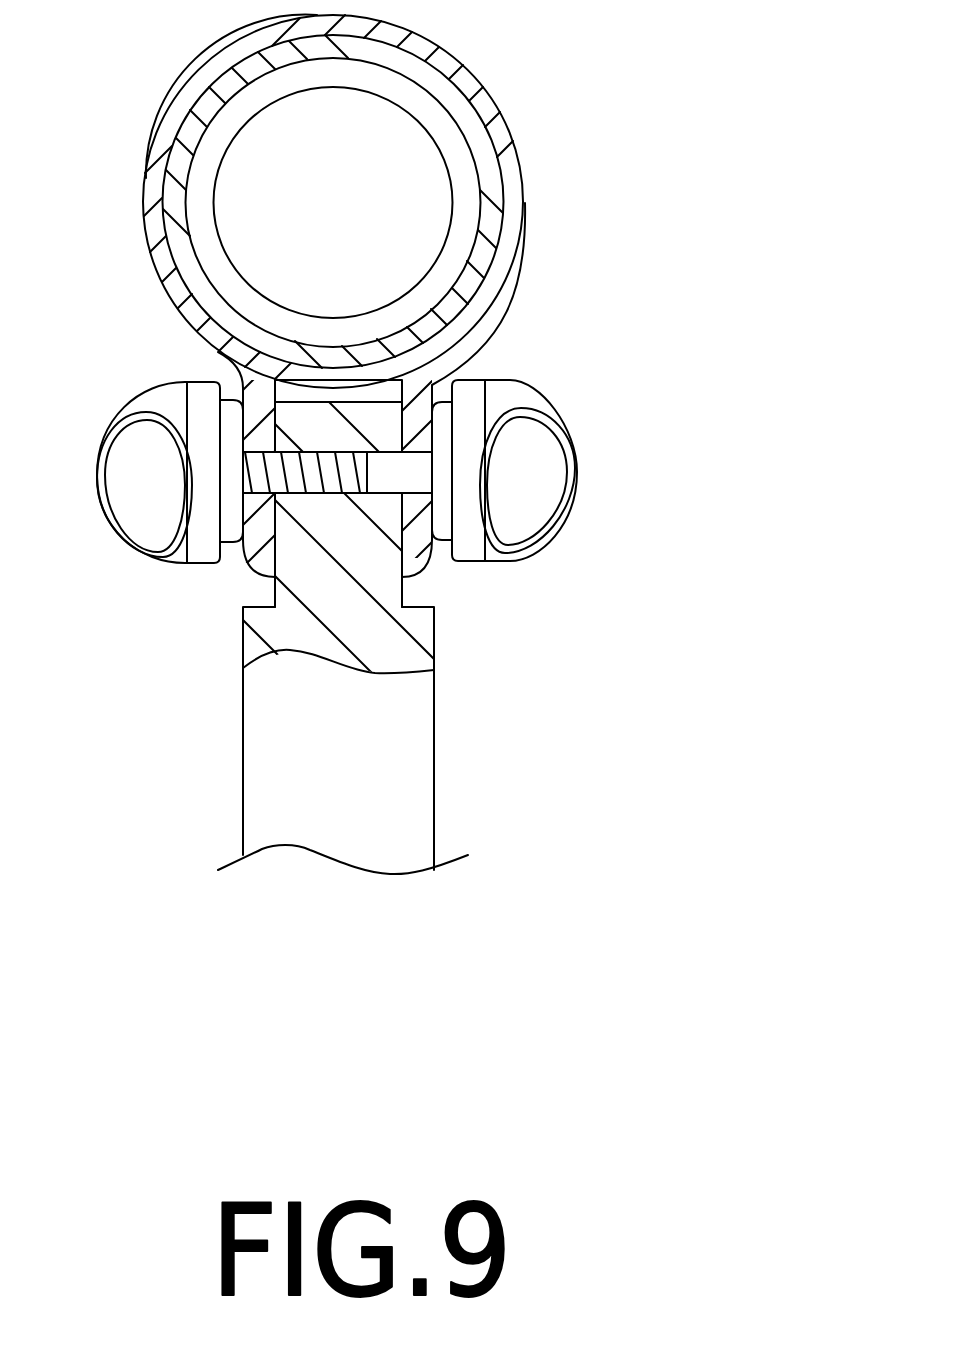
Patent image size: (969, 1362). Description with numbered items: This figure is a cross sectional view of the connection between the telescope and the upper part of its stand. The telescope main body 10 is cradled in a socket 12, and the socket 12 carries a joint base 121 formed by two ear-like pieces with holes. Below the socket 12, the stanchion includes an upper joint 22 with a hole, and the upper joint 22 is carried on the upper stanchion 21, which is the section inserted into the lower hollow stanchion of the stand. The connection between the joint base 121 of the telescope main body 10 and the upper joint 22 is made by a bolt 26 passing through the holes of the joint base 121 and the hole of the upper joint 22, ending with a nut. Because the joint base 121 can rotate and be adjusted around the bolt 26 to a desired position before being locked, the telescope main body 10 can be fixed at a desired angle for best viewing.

The socket 12 is at (453, 70).
The telescope main body 10 is at (420, 191).
The upper joint 22 is at (313, 422).
The bolt 26 is at (395, 473).
The joint base 121 is at (255, 547).
The upper stanchion 21 is at (403, 770).